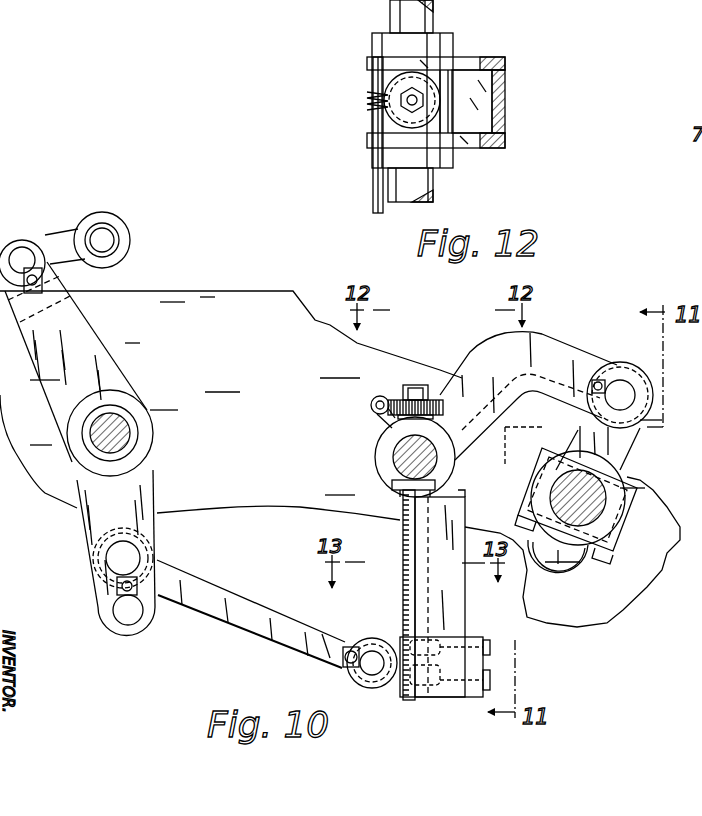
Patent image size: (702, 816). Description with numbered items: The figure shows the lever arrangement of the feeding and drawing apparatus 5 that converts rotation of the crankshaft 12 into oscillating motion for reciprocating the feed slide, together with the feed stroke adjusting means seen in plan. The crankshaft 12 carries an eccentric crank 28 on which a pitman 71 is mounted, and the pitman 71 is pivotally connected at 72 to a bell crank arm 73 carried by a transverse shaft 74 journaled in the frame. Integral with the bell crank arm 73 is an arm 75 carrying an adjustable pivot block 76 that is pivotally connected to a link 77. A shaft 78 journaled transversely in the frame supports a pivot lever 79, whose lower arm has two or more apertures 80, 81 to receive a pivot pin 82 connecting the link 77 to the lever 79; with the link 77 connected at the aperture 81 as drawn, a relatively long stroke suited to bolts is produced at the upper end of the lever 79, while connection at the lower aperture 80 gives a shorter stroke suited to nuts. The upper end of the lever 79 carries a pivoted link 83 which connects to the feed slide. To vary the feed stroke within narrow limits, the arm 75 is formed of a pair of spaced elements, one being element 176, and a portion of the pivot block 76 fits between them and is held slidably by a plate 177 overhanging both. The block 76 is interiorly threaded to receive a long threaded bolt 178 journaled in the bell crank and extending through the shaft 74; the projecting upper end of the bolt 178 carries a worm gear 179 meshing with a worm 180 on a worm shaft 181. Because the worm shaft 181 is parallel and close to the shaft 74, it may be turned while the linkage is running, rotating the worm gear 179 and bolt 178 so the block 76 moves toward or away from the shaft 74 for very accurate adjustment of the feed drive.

In FIG. 10, the feeding and drawing apparatus 5 is at (280, 355).
In FIG. 10, the crankshaft 12 is at (558, 556).
In FIG. 10, the eccentric crank 28 is at (590, 497).
In FIG. 10, the pitman 71 is at (617, 450).
In FIG. 10, the pivot connection 72 is at (628, 398).
In FIG. 12, the bell crank arm 73 is at (478, 62).
In FIG. 10, the bell crank arm 73 is at (547, 347).
In FIG. 12, the transverse shaft 74 is at (427, 188).
In FIG. 10, the transverse shaft 74 is at (395, 458).
In FIG. 10, the arm 75 is at (445, 583).
In FIG. 10, the adjustable pivot block 76 is at (392, 688).
In FIG. 10, the link 77 is at (290, 580).
In FIG. 10, the shaft 78 is at (130, 432).
In FIG. 10, the pivot lever 79 is at (83, 332).
In FIG. 10, the lower aperture 80 is at (115, 612).
In FIG. 10, the aperture 81 is at (123, 560).
In FIG. 10, the pivot pin 82 is at (134, 585).
In FIG. 10, the pivoted link 83 is at (62, 243).
In FIG. 10, the spaced element 176 is at (458, 622).
In FIG. 10, the plate 177 is at (455, 692).
In FIG. 10, the threaded bolt 178 is at (403, 600).
In FIG. 12, the worm gear 179 is at (402, 84).
In FIG. 10, the worm gear 179 is at (408, 385).
In FIG. 12, the worm 180 is at (369, 105).
In FIG. 10, the worm 180 is at (371, 408).
In FIG. 12, the worm shaft 181 is at (373, 190).